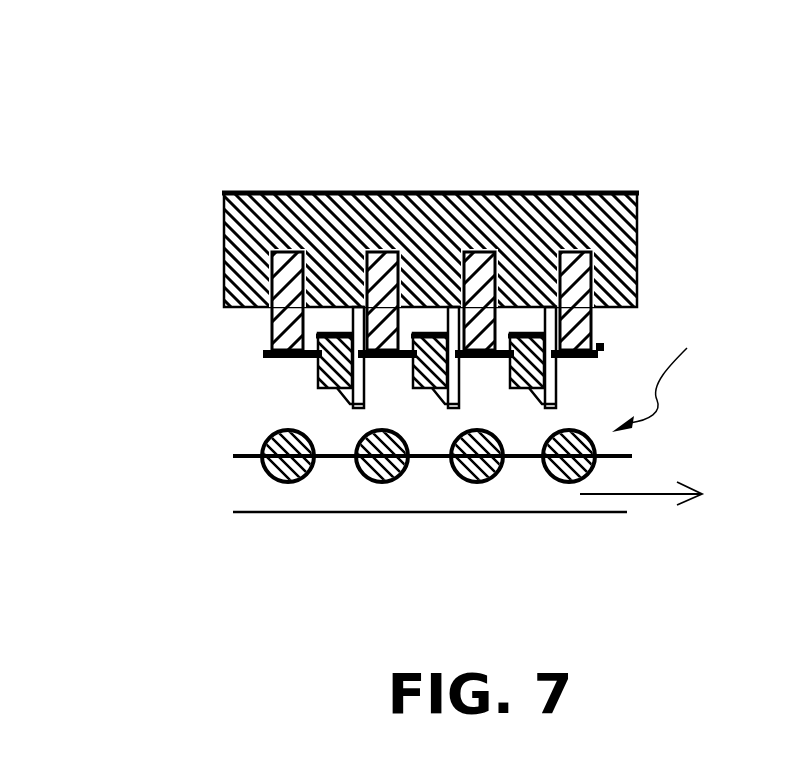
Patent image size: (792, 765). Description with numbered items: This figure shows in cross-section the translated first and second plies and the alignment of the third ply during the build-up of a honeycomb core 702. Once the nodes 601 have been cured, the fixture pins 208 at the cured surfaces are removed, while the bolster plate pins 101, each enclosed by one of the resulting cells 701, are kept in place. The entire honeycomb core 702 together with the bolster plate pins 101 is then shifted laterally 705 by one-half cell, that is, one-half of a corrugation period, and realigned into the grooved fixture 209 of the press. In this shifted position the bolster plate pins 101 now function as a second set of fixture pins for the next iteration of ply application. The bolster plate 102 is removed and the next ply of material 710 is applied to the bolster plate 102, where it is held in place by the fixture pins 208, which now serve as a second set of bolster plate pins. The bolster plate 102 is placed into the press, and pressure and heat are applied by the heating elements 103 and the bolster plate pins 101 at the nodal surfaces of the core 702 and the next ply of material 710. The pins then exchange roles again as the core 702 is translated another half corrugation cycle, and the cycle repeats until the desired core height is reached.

The bolster plate pins 101 is at (267, 477).
The bolster plate 102 is at (447, 193).
The heating elements 103 is at (272, 324).
The fixture pins 208 is at (318, 383).
The grooved fixture 209 is at (437, 488).
The nodes 601 is at (336, 452).
The cells 701 is at (357, 427).
The honeycomb core 702 is at (685, 372).
The lateral shift 705 is at (660, 494).
The next ply of material 710 is at (600, 345).